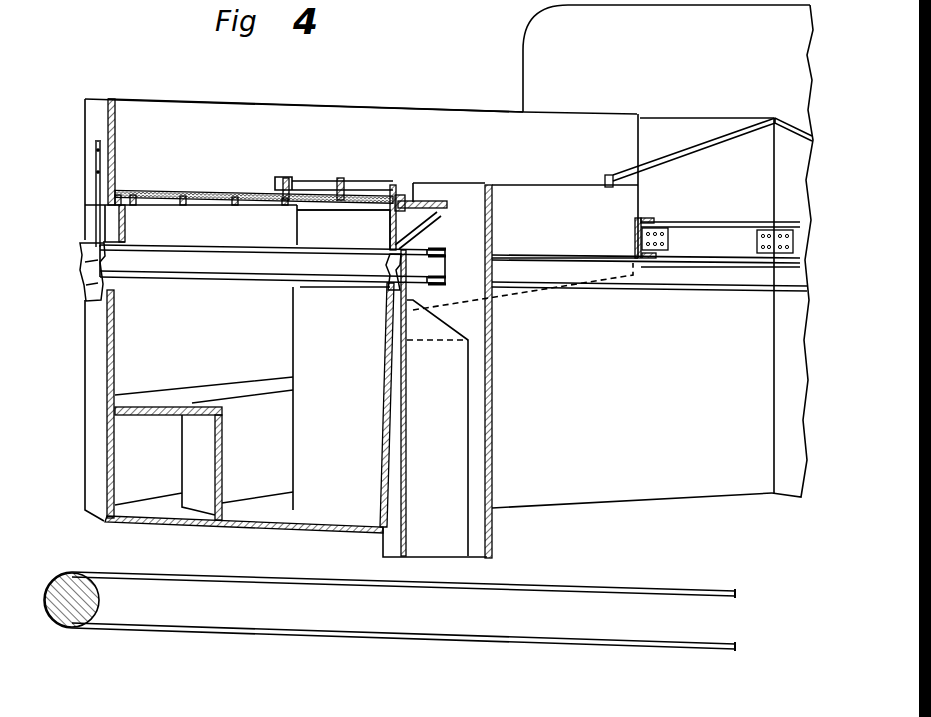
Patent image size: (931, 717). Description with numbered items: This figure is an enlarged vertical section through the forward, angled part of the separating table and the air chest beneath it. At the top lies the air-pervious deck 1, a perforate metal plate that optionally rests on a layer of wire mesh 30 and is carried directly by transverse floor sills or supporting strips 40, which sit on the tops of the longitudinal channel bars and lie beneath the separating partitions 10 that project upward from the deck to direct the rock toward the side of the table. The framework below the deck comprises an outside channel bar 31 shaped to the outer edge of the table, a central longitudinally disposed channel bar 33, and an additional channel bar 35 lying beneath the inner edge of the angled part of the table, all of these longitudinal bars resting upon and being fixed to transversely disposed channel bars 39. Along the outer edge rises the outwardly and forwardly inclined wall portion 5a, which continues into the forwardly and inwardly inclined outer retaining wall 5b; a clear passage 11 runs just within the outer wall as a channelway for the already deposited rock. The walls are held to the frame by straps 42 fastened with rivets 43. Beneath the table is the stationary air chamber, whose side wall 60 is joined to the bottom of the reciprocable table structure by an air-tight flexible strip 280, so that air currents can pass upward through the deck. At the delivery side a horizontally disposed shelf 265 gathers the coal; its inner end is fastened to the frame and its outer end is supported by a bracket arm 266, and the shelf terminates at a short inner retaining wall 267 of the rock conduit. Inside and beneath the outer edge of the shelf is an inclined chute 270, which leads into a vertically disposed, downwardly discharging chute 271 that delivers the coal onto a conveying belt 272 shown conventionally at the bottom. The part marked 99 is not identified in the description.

The bed or deck 1 is at (217, 190).
The inclined portion of outer retaining wall 5a is at (85, 108).
The outer retaining wall 5b is at (290, 112).
The separating partitions 10 is at (343, 175).
The clear passage 11 is at (157, 178).
The layer of wire mesh 30 is at (268, 205).
The outside channel bar 31 is at (126, 230).
The central channel bar 33 is at (646, 220).
The additional channel bar 35 is at (388, 232).
The transversely-disposed channel bars 39 is at (246, 258).
The floor sills or supporting strips 40 is at (233, 205).
The straps 42 is at (96, 190).
The rivets 43 is at (96, 172).
The side wall of air chamber 60 is at (95, 347).
The compartment shelf 99 is at (150, 448).
The shelf 265 is at (426, 183).
The bracket arms 266 is at (433, 228).
The short inner retaining wall 267 is at (703, 158).
The chute 270 is at (537, 240).
The vertically-disposed downwardly-discharging chute 271 is at (455, 411).
The conveying belt 272 is at (602, 563).
The flexible strips 280 is at (85, 272).